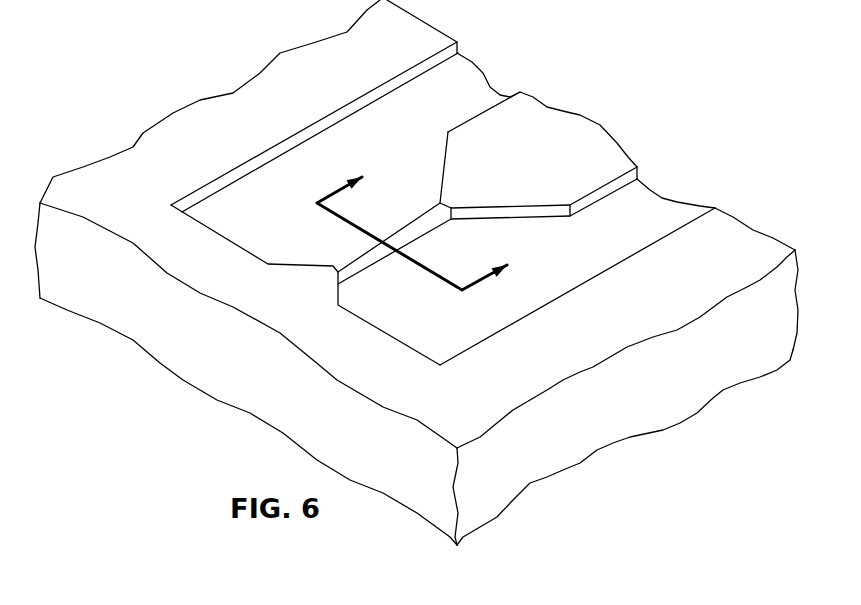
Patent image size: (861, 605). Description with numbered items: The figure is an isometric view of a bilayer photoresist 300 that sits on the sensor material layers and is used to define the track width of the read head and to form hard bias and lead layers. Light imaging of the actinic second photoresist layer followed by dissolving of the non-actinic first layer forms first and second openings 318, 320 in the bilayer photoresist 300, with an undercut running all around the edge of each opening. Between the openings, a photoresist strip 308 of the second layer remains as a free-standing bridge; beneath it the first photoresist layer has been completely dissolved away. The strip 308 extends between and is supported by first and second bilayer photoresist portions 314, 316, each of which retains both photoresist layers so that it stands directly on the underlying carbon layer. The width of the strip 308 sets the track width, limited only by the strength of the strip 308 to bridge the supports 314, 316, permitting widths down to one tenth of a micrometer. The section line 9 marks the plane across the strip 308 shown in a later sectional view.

The bilayer photoresist 300 is at (652, 148).
The photoresist strip 308 is at (407, 223).
The first bilayer photoresist portion 314 is at (314, 160).
The second bilayer photoresist portion 316 is at (550, 154).
The first opening 318 is at (210, 108).
The second opening 320 is at (454, 285).
The section line 9- 9 is at (420, 225).